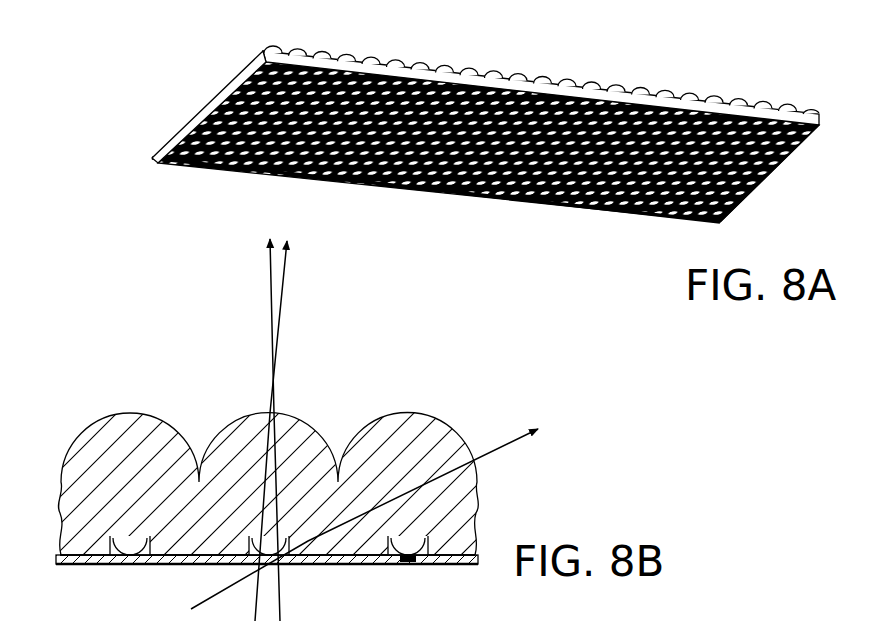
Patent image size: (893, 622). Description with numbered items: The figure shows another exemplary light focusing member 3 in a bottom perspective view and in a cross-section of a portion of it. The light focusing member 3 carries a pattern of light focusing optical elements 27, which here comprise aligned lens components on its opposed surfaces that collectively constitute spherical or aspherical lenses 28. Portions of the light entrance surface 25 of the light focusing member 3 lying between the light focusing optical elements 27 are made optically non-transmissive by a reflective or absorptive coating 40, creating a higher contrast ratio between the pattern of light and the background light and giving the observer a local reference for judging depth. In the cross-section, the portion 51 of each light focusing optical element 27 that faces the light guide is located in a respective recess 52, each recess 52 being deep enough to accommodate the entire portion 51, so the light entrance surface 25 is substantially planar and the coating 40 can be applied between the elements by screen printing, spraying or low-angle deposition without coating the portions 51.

In FIG. 8A, the light focusing member 3 is at (485, 158).
In FIG. 8B, the light focusing member 3 is at (309, 430).
In FIG. 8A, the light focusing optical elements 27 is at (618, 83).
In FIG. 8B, the light focusing optical elements 27 is at (456, 411).
In FIG. 8A, the spherical or aspherical lenses 28 is at (638, 88).
In FIG. 8A, the reflective or absorptive coating 40 is at (565, 204).
In FIG. 8B, the reflective or absorptive coating 40 is at (335, 553).
In FIG. 8B, the light entrance surface 25 is at (188, 548).
In FIG. 8B, the portion of light focusing optical element 51 is at (409, 549).
In FIG. 8B, the recess 52 is at (398, 556).